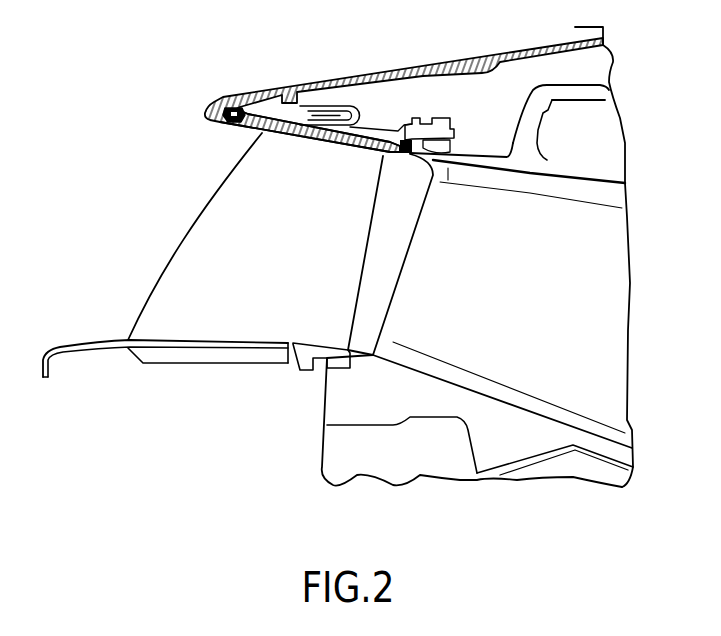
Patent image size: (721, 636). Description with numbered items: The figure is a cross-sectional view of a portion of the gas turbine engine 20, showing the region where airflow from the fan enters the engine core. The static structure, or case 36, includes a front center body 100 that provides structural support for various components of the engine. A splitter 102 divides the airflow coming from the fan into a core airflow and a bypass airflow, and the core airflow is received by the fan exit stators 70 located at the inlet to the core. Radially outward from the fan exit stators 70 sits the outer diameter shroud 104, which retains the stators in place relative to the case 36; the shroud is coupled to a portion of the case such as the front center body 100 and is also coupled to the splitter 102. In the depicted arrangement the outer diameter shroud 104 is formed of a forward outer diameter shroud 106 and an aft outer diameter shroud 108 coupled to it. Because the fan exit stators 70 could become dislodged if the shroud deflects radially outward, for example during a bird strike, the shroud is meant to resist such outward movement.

The gas turbine engine 20 is at (134, 69).
The case 36 is at (542, 167).
The fan exit stators 70 is at (175, 262).
The front center body 100 is at (617, 230).
The splitter 102 is at (232, 108).
The outer diameter shroud 104 is at (337, 111).
The forward outer diameter shroud 106 is at (264, 127).
The aft outer diameter shroud 108 is at (398, 151).